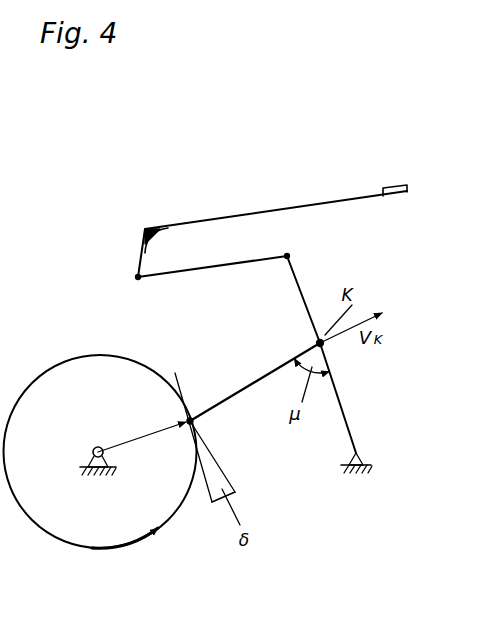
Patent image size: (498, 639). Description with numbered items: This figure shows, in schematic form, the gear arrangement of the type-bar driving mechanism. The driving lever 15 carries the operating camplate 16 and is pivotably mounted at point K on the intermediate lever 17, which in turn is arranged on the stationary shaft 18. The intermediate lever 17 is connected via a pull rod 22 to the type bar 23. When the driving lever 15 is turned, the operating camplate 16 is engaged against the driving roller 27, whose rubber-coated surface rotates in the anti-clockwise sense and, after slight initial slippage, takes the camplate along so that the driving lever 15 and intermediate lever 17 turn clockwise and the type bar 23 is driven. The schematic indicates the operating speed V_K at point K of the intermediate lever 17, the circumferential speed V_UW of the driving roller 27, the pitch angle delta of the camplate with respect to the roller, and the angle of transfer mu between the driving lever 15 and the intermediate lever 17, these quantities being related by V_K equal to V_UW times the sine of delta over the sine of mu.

The driving lever 15 is at (233, 393).
The operating camplate 16 is at (198, 442).
The intermediate lever 17 is at (340, 401).
The stationary shaft 18 is at (358, 453).
The pull rod 22 is at (218, 266).
The type bar 23 is at (225, 218).
The driving roller 27 is at (63, 522).